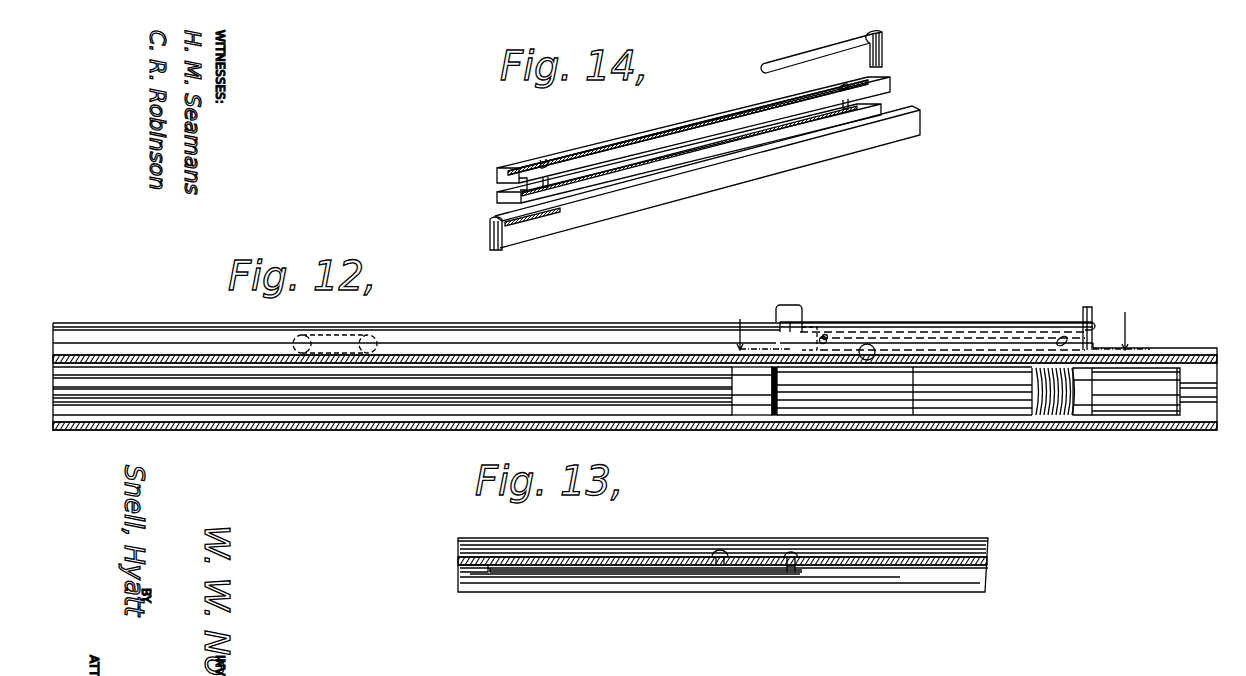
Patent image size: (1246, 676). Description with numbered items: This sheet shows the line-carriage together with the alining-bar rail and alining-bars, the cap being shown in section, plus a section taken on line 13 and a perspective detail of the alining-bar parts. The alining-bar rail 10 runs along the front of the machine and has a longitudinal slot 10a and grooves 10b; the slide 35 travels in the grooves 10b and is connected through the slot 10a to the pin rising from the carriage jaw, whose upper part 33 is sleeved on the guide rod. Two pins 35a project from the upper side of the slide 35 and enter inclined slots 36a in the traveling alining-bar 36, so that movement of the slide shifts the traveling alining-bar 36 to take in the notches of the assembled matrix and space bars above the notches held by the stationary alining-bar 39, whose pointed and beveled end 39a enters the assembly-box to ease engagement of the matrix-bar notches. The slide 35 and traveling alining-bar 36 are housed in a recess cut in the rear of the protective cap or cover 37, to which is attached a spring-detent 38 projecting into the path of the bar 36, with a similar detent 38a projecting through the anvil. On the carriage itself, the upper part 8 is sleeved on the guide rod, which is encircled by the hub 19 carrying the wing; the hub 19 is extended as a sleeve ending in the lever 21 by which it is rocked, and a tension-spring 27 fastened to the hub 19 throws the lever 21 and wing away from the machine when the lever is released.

In FIG. 12, the upper part of the carriage 8 is at (1133, 388).
In FIG. 12, the alining-bar rail 10 is at (495, 340).
In FIG. 13, the alining-bar rail 10 is at (988, 562).
In FIG. 12, the longitudinal slot 10a is at (595, 340).
In FIG. 12, the grooves 10b is at (660, 352).
In FIG. 12, the pivot of lever 13 is at (937, 336).
In FIG. 12, the hub 19 is at (1080, 412).
In FIG. 12, the lever 21 is at (1173, 402).
In FIG. 12, the tension-spring 27 is at (1043, 410).
In FIG. 12, the upper part of the jaw 33 is at (823, 388).
In FIG. 14, the slide 35 is at (497, 198).
In FIG. 13, the slide 35 is at (488, 572).
In FIG. 14, the pins 35a is at (523, 182).
In FIG. 12, the pins 35a is at (826, 335).
In FIG. 14, the traveling alining-bar 36 is at (657, 133).
In FIG. 12, the traveling alining-bar 36 is at (918, 335).
In FIG. 13, the traveling alining-bar 36 is at (627, 567).
In FIG. 14, the inclined slots 36a is at (545, 163).
In FIG. 12, the inclined slots 36a is at (818, 338).
In FIG. 13, the cap or cover 37 is at (625, 568).
In FIG. 14, the spring-detent 38 is at (858, 43).
In FIG. 12, the spring-detent 38 is at (797, 345).
In FIG. 13, the spring-detent 38 is at (757, 572).
In FIG. 12, the spring-detent 38a is at (342, 342).
In FIG. 14, the stationary alining-bar 39 is at (758, 168).
In FIG. 12, the stationary alining-bar 39 is at (975, 330).
In FIG. 14, the pointed and beveled end 39a is at (492, 224).
In FIG. 12, the pointed and beveled end 39a is at (1097, 322).